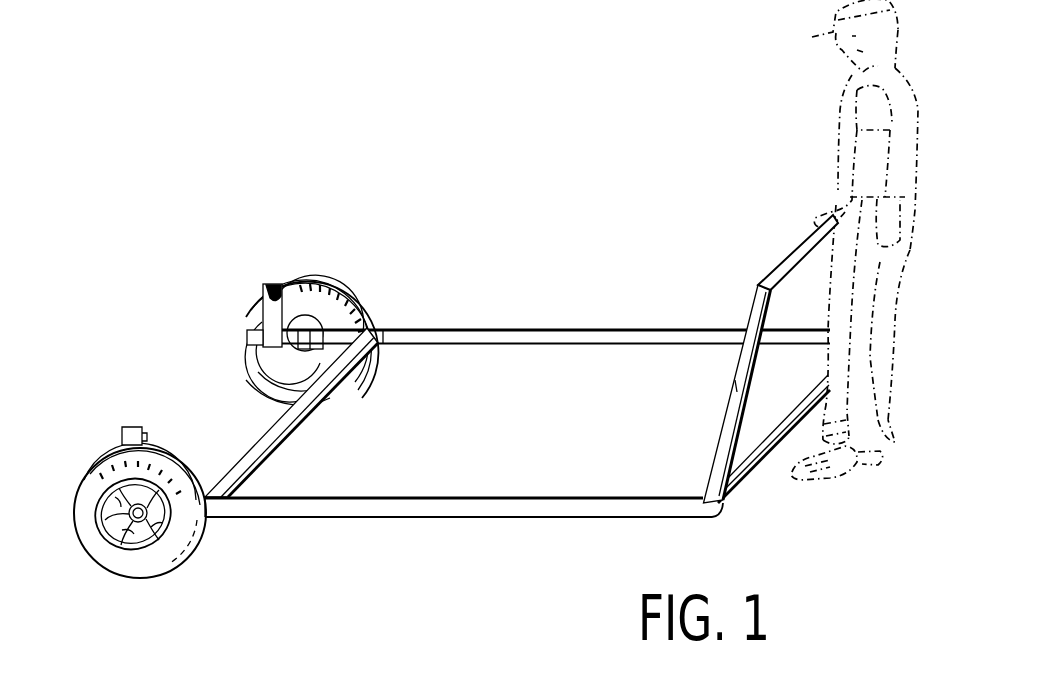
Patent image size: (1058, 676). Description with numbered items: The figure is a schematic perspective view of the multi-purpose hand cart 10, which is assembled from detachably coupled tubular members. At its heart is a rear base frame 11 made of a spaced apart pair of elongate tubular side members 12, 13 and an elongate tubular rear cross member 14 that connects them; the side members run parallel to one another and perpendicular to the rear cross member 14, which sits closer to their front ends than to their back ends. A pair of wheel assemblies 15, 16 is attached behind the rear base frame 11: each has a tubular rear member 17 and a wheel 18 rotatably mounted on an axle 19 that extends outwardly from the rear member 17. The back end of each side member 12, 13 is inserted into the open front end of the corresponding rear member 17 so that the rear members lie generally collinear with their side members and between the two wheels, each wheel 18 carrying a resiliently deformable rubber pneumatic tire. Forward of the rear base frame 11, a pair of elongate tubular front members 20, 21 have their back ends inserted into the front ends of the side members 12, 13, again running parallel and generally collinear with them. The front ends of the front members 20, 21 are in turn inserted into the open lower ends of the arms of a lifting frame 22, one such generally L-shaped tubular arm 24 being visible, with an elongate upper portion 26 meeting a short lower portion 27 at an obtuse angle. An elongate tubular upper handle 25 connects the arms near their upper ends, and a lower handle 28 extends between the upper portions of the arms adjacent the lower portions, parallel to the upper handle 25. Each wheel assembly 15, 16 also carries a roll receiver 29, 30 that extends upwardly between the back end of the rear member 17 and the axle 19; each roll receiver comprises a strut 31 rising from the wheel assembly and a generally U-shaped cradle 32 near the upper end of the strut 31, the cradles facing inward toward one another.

The multi-purpose hand cart 10 is at (362, 106).
The rear base frame 11 is at (392, 300).
The side member 12 is at (420, 408).
The side member 13 is at (245, 558).
The rear cross member 14 is at (364, 450).
The wheel assembly 15 is at (350, 242).
The wheel assembly 16 is at (178, 445).
The tubular rear member 17 is at (290, 353).
The wheel 18 is at (323, 262).
The axle 19 is at (310, 375).
The front member 20 is at (541, 326).
The front member 21 is at (437, 570).
The lifting frame 22 is at (734, 345).
The arm 24 is at (706, 462).
The upper handle 25 is at (774, 241).
The upper portion 26 is at (728, 397).
The lower portion 27 is at (663, 540).
The lower handle 28 is at (755, 465).
The roll receiver 29 is at (216, 273).
The roll receiver 30 is at (131, 421).
The strut 31 is at (263, 323).
The cradle 32 is at (218, 271).